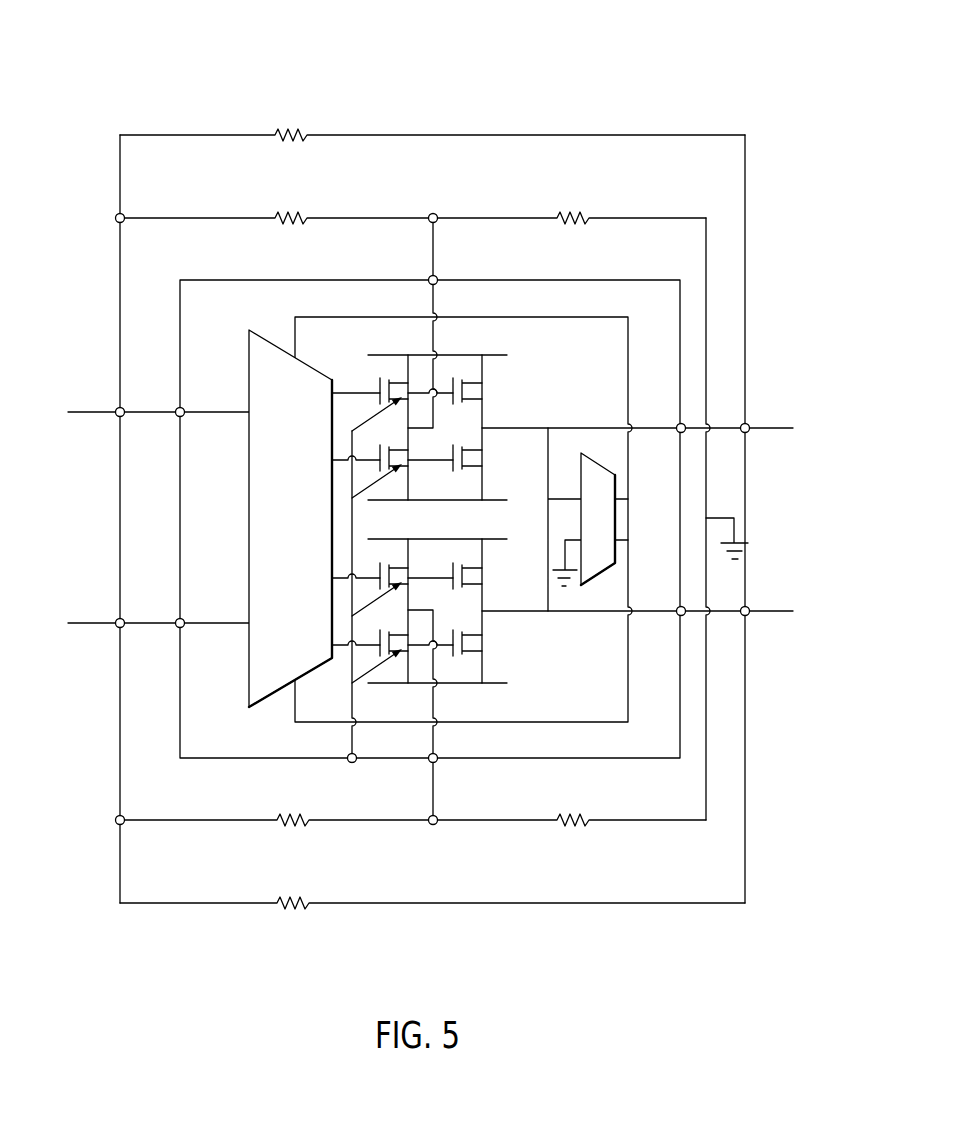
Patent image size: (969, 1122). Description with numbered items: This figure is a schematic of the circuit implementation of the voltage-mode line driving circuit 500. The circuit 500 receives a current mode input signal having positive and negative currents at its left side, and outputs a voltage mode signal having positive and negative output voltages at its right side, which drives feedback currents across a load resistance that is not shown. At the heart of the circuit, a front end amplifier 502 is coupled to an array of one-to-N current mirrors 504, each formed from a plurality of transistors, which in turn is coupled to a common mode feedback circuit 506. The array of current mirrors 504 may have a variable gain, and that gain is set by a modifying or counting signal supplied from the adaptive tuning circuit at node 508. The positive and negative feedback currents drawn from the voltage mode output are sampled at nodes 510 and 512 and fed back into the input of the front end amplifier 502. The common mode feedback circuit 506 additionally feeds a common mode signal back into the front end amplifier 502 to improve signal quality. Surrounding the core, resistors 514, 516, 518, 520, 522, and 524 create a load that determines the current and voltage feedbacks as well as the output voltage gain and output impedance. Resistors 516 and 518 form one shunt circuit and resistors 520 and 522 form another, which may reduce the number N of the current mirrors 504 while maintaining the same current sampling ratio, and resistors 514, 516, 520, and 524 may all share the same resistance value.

The voltage-mode line driving circuit 500 is at (102, 40).
The front end amplifier 502 is at (308, 515).
The array of 1:N current mirrors 504 is at (448, 532).
The common mode feedback circuit 506 is at (616, 523).
The node 508 is at (355, 762).
The node 510 is at (430, 277).
The node 512 is at (436, 762).
The resistor 514 is at (286, 130).
The resistor 516 is at (286, 214).
The resistor 518 is at (566, 214).
The resistor 520 is at (286, 815).
The resistor 522 is at (576, 815).
The resistor 524 is at (286, 898).